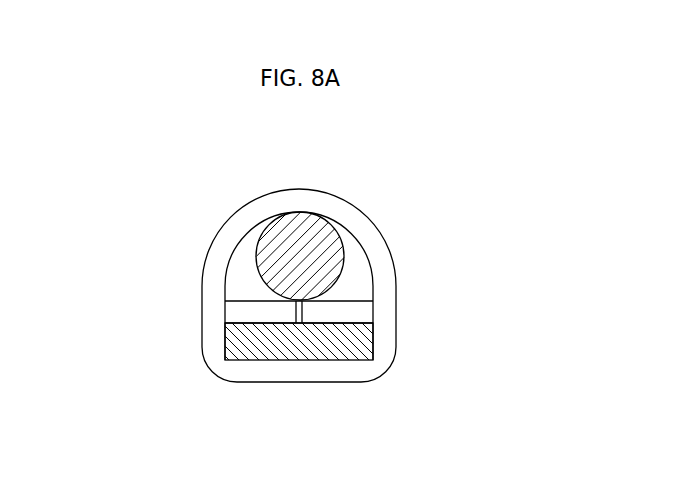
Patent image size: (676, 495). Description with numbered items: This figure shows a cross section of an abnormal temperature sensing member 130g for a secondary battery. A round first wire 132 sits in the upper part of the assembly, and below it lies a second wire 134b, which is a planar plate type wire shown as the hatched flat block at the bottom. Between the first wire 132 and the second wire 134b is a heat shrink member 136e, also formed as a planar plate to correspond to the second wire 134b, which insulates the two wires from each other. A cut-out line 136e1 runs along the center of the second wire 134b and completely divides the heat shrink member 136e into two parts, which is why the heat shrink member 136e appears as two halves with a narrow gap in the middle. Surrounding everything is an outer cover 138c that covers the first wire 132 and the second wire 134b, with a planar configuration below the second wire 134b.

The abnormal temperature sensing member 130g is at (155, 147).
The first wire 132 is at (320, 232).
The outer cover 138c is at (387, 272).
The heat shrink member 136e is at (232, 312).
The cut-out line 136e1 is at (297, 326).
The second wire 134b is at (237, 357).